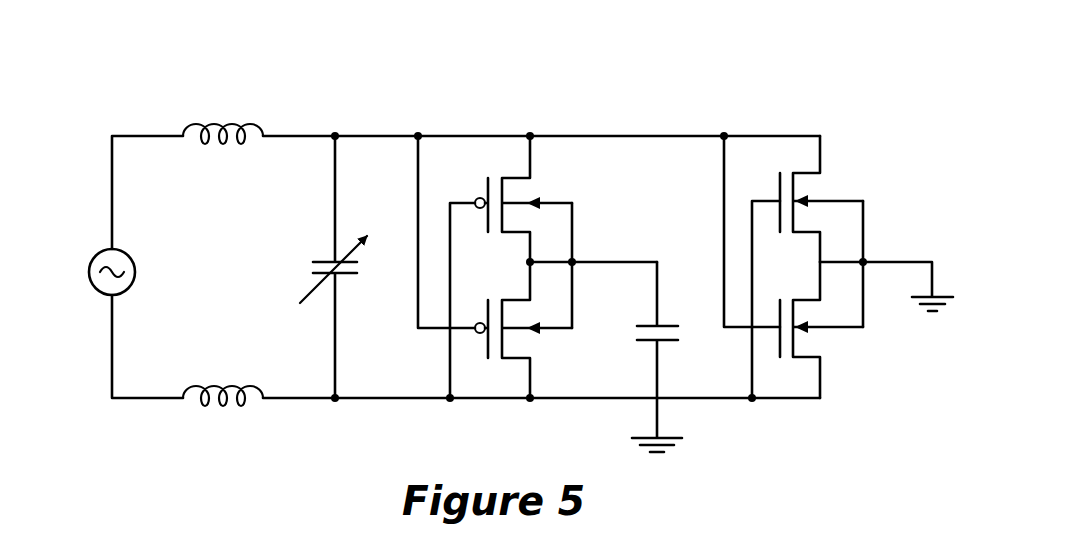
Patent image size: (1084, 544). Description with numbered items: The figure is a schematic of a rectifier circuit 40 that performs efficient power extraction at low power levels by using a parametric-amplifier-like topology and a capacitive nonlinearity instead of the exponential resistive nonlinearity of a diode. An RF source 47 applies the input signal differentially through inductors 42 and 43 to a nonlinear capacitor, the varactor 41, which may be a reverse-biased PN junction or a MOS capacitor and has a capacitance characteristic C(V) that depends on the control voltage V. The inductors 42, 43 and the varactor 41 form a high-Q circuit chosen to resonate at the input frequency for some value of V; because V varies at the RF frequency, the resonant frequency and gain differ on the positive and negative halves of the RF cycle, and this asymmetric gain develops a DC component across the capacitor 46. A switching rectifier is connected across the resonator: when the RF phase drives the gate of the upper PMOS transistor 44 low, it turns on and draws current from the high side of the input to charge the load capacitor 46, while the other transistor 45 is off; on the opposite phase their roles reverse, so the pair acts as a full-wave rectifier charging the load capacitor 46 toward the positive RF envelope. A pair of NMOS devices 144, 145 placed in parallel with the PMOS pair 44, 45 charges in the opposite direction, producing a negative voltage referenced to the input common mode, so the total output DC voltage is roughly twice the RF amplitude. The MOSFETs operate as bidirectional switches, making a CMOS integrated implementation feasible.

The rectifier circuit 40 is at (112, 125).
The varactor 41 is at (322, 258).
The inductor 42 is at (193, 124).
The inductor 43 is at (190, 387).
The upper PMOS transistor 44 is at (540, 201).
The PMOS transistor 45 is at (540, 331).
The load capacitor 46 is at (668, 343).
The RF source 47 is at (96, 254).
The NMOS device 144 is at (865, 222).
The NMOS device 145 is at (866, 302).